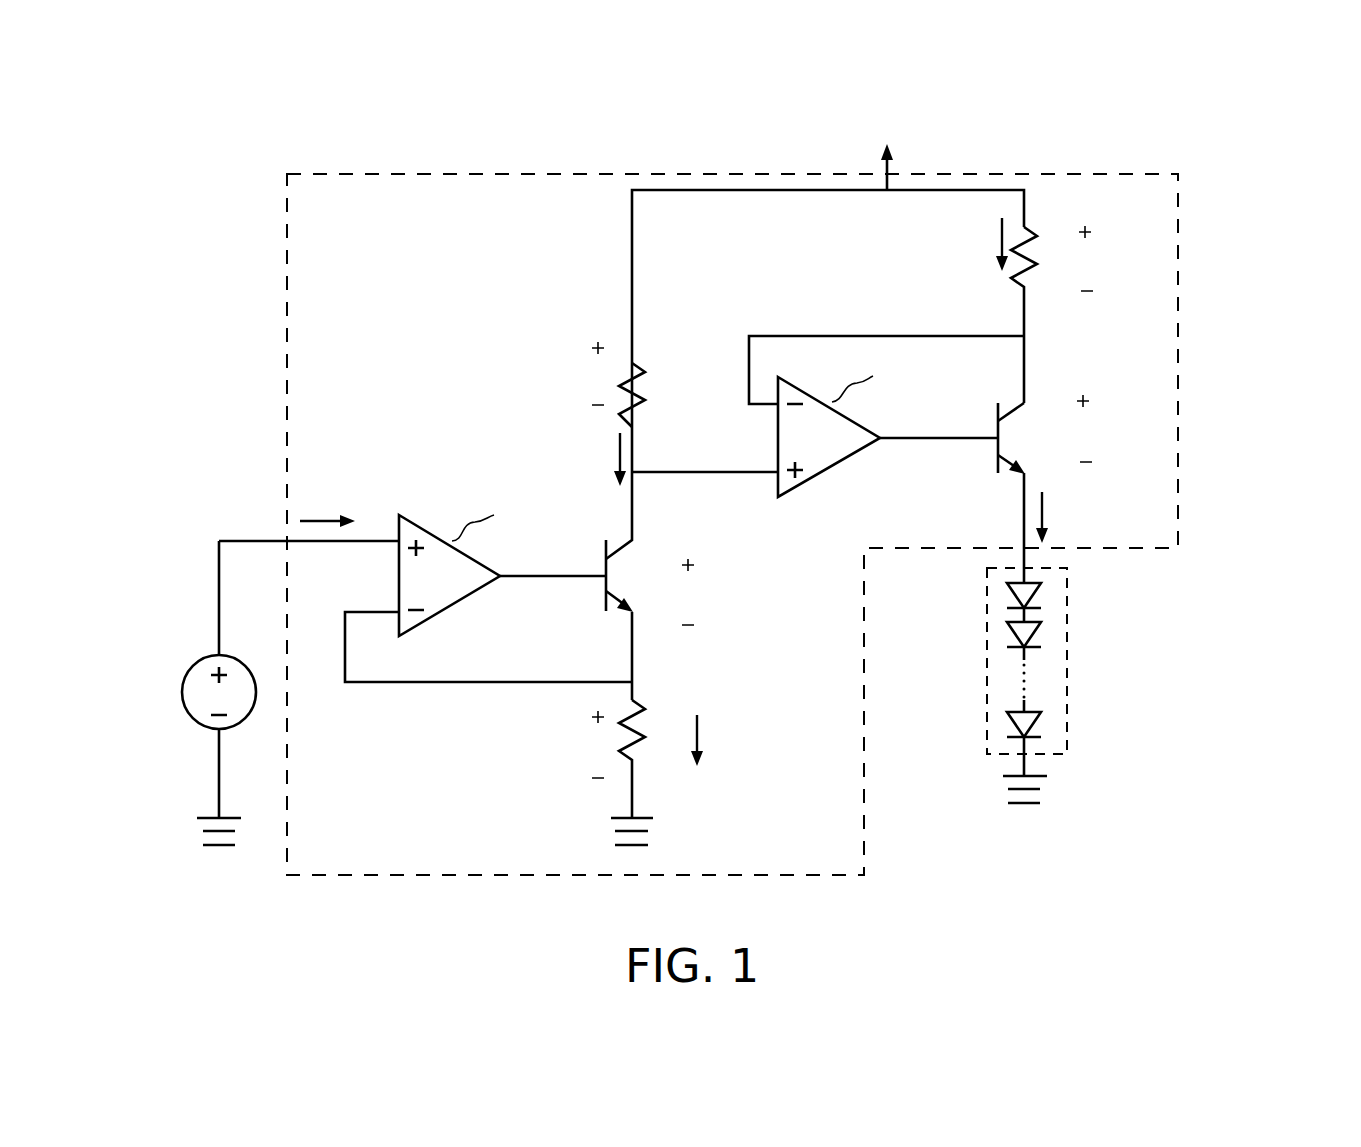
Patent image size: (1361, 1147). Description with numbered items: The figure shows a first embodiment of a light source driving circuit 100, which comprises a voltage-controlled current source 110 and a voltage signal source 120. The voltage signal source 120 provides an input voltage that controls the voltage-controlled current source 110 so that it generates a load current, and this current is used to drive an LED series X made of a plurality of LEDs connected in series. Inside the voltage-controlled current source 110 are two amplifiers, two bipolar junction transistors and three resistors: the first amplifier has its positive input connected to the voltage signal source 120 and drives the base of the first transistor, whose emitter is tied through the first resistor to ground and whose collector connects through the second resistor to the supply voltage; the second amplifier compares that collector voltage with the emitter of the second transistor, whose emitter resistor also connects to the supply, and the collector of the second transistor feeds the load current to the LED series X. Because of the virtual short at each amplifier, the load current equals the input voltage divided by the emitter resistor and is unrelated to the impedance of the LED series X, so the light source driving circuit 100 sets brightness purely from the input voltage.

The light source driving circuit 100 is at (1200, 164).
The voltage-controlled current source 110 is at (745, 173).
The voltage signal source 120 is at (194, 645).
The LED series X is at (1067, 681).